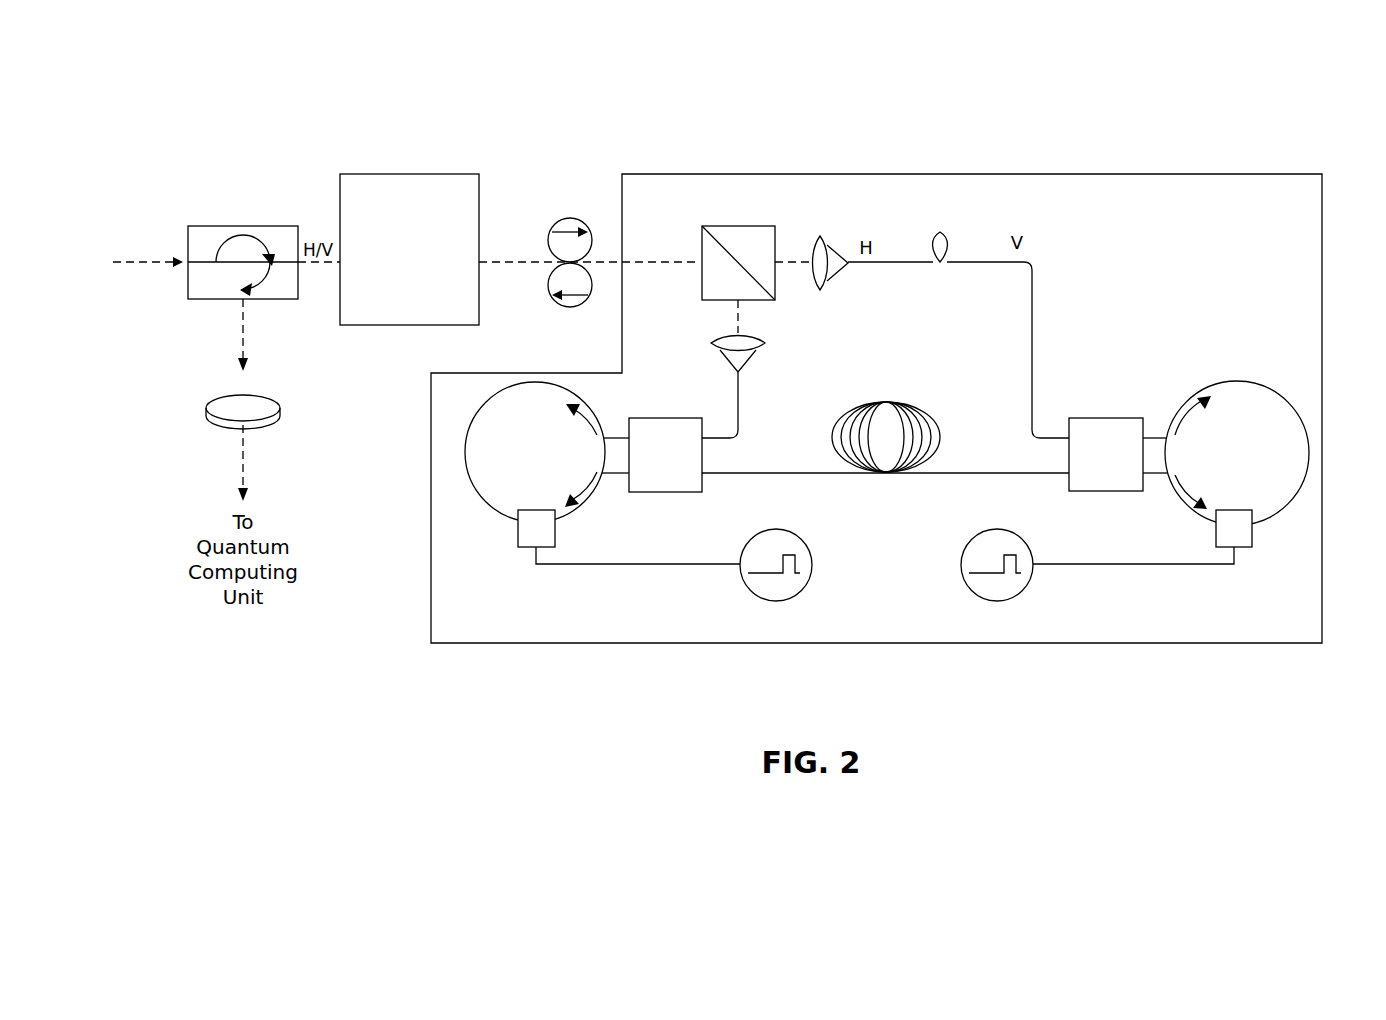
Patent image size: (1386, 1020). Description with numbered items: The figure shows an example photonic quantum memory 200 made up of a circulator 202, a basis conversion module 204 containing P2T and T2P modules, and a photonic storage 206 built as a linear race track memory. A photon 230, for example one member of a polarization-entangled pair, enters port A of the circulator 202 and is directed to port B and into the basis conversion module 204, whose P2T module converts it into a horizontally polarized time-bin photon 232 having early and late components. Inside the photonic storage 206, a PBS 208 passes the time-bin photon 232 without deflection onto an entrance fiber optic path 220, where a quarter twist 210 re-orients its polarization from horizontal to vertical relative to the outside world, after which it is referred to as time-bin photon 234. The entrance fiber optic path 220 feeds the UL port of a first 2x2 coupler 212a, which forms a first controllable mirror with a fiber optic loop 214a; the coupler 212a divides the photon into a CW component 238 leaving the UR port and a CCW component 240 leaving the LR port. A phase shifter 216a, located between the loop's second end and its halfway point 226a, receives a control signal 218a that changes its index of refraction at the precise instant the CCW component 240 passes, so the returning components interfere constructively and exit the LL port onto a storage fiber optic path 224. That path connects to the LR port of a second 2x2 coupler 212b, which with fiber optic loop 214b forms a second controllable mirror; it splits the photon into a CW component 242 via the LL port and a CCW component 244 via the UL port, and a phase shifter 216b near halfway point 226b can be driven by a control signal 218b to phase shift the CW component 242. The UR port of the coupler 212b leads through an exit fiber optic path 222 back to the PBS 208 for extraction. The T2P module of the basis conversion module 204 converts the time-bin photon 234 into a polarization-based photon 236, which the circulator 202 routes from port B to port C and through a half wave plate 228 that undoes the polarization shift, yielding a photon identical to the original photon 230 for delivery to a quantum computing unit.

The photonic quantum memory 200 is at (1300, 54).
The circulator 202 is at (275, 225).
The basis conversion module 204 is at (400, 174).
The photonic storage 206 is at (1097, 174).
The PBS 208 is at (776, 300).
The quarter twist 210 is at (942, 266).
The 2x2 coupler 212a is at (1097, 491).
The 2x2 coupler 212b is at (660, 492).
The fiber optic loop 214a is at (1248, 381).
The fiber optic loop 214b is at (494, 396).
The phase shifter 216a is at (1253, 540).
The phase shifter 216b is at (517, 536).
The control signal 218a is at (961, 567).
The control signal 218b is at (800, 541).
The entrance fiber optic path 220 is at (1033, 305).
The exit fiber optic path 222 is at (740, 405).
The storage fiber optic path 224 is at (950, 475).
The halfway point 226a is at (1257, 460).
The halfway point 226b is at (507, 472).
The half wave plate 228 is at (207, 422).
The photon 230 is at (146, 264).
The time-bin photon 232 is at (566, 218).
The time-bin photon 234 is at (575, 307).
The polarization-based photon 236 is at (247, 304).
The CW component 238 is at (1183, 406).
The CCW component 240 is at (1187, 500).
The CW component 242 is at (580, 505).
The CCW component 244 is at (600, 413).